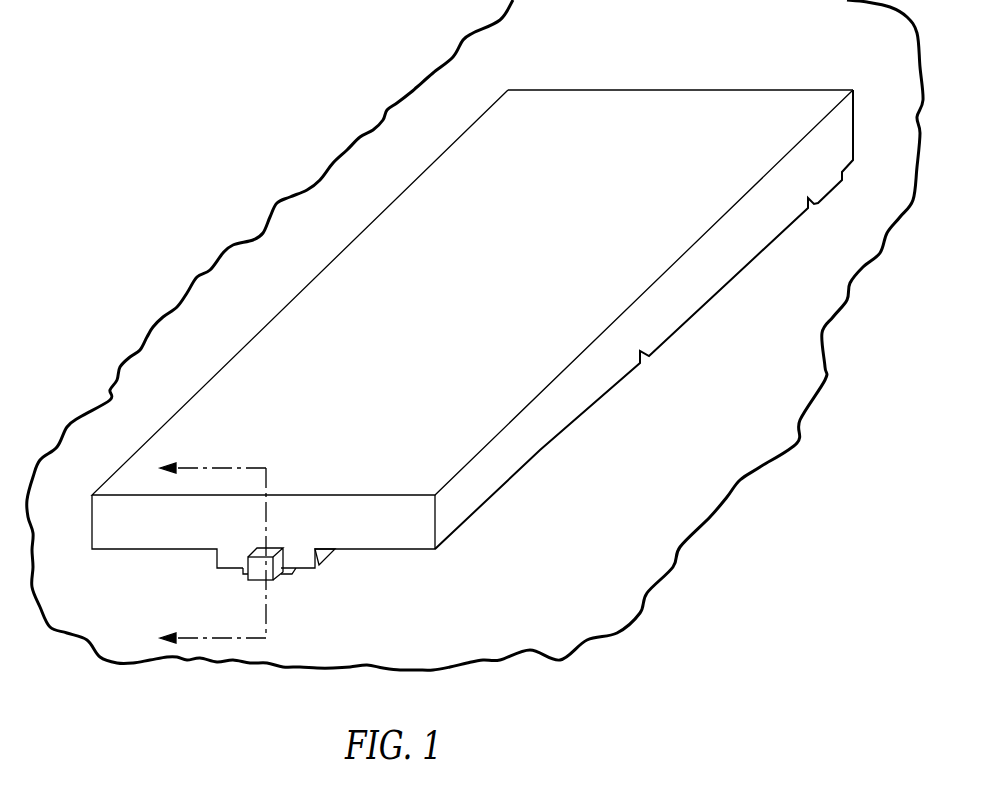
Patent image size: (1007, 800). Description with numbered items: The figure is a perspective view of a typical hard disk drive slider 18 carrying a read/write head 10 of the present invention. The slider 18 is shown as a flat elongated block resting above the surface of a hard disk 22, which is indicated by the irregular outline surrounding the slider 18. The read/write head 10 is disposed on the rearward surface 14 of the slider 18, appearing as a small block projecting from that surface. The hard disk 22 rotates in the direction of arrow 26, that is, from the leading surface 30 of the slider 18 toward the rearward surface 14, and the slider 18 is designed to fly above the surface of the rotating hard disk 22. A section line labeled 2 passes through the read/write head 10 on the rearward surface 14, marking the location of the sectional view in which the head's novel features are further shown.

The section line 2- 2 is at (204, 553).
The read/write head 10 is at (257, 571).
The rearward surface 14 is at (385, 540).
The slider 18 is at (362, 267).
The hard disk 22 is at (671, 411).
The arrow 26 is at (472, 311).
The leading surface 30 is at (779, 90).